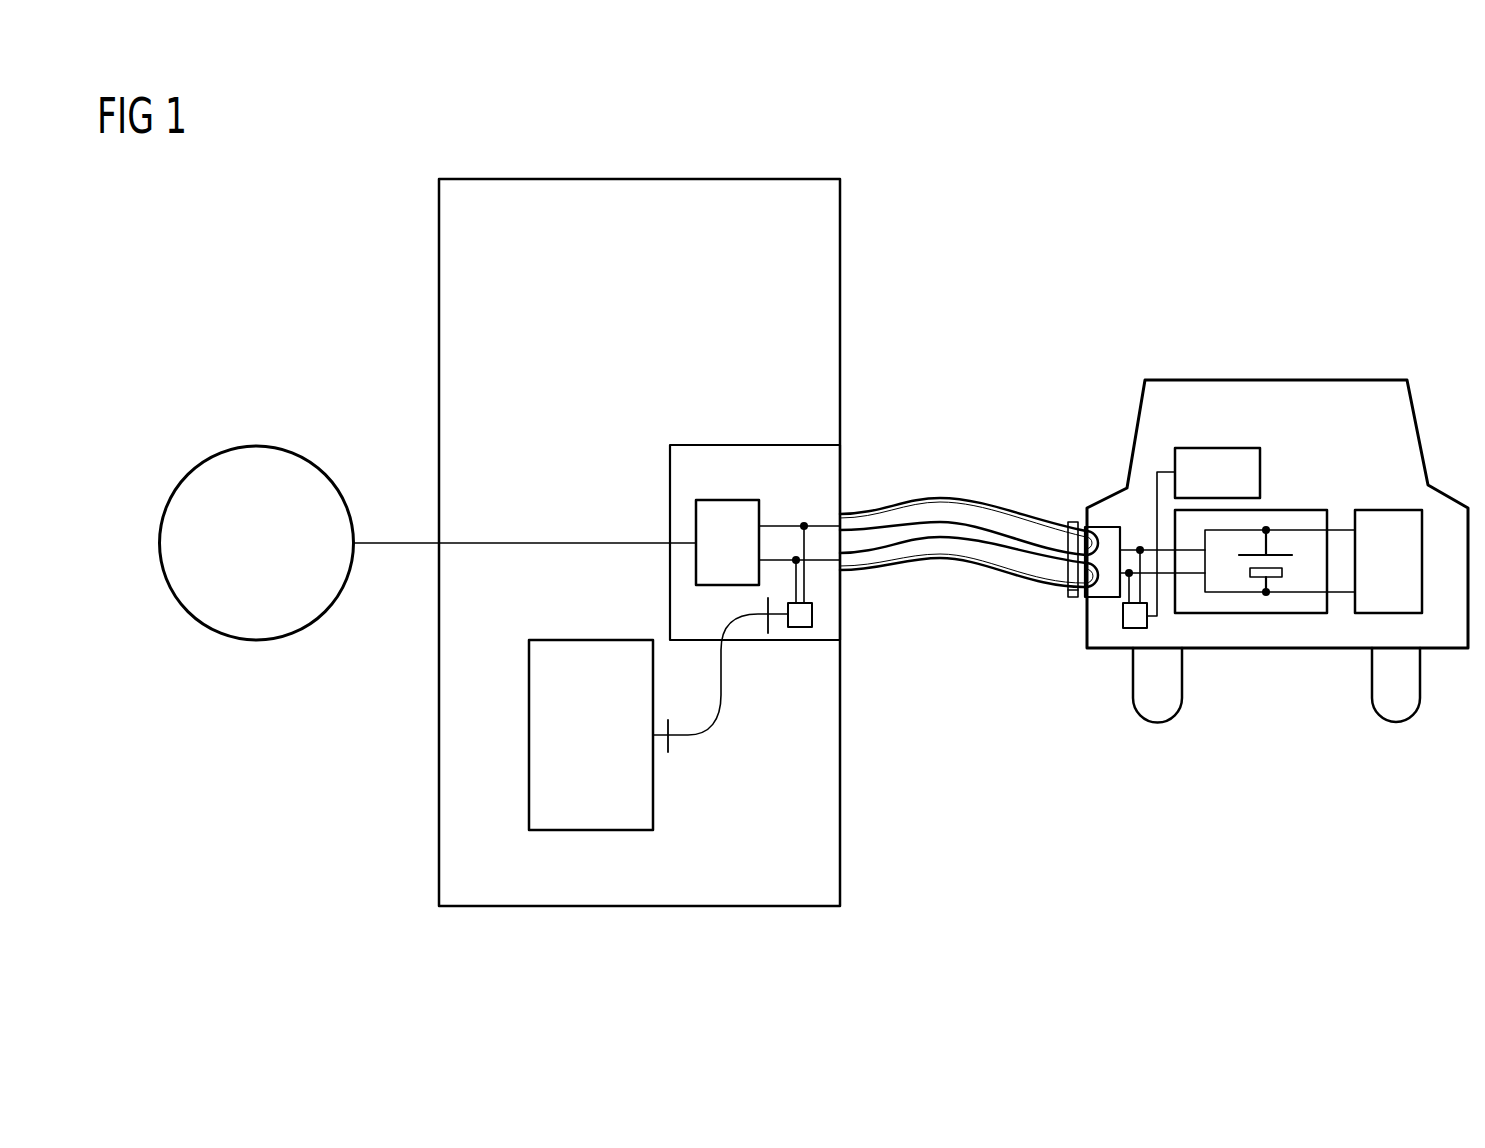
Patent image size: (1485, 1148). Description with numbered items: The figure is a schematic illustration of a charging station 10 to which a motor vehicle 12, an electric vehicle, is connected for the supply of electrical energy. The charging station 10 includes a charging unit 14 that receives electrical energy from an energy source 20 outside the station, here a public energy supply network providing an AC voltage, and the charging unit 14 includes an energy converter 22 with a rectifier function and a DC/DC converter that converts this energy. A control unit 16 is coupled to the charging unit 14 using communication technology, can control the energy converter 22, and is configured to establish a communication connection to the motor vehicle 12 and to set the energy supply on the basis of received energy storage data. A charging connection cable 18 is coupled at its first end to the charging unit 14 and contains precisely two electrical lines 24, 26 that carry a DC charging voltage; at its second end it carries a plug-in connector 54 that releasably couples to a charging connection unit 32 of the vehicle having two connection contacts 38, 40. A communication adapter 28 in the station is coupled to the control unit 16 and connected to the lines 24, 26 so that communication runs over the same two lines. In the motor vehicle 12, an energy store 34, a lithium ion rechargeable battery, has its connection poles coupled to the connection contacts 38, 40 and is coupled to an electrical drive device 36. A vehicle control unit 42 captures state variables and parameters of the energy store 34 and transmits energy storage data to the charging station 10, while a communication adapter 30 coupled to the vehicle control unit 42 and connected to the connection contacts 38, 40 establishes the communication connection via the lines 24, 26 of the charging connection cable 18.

The charging station 10 is at (826, 162).
The motor vehicle 12 is at (1378, 303).
The charging unit 14 is at (760, 640).
The control unit 16 is at (653, 787).
The charging connection cable 18 is at (969, 522).
The energy source 20 is at (257, 446).
The energy converter 22 is at (696, 518).
The electrical line 24 is at (950, 512).
The electrical line 26 is at (950, 552).
The communication adapter 28 is at (802, 628).
The communication adapter 30 is at (1133, 628).
The charging connection unit 32 is at (1103, 537).
The energy store 34 is at (1288, 552).
The drive device 36 is at (1385, 510).
The connection contact 38 is at (1072, 522).
The connection contact 40 is at (1090, 595).
The vehicle control unit 42 is at (1214, 448).
The plug-in connector 54 is at (1068, 597).